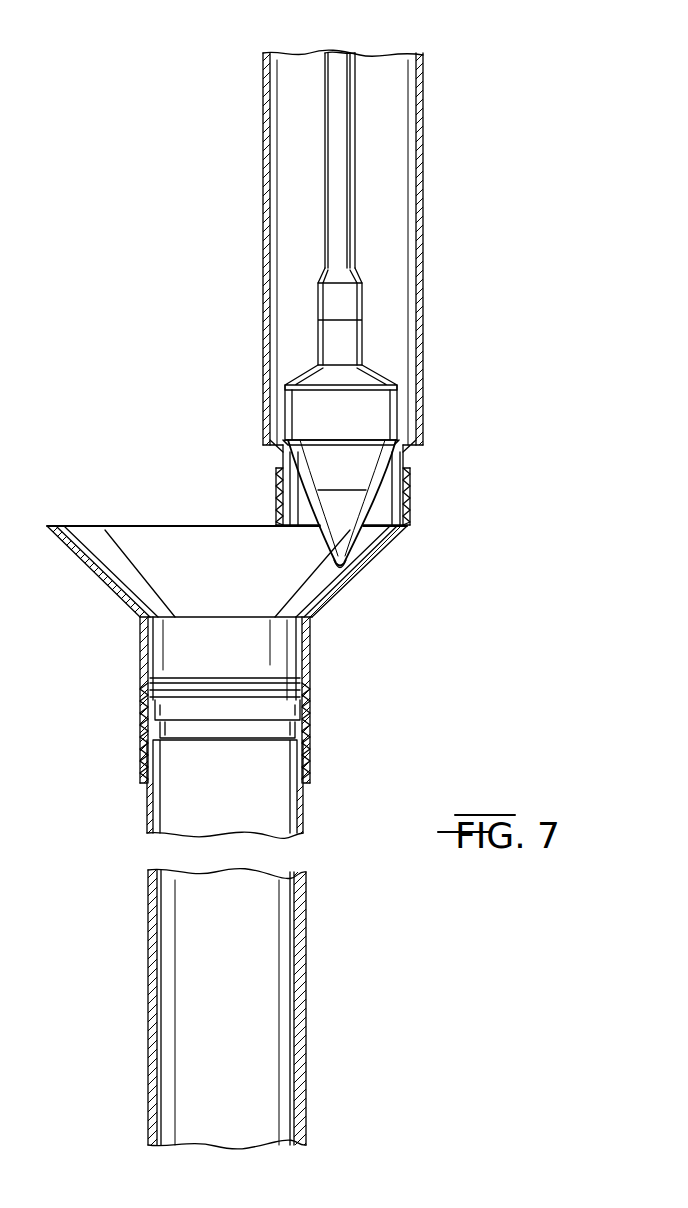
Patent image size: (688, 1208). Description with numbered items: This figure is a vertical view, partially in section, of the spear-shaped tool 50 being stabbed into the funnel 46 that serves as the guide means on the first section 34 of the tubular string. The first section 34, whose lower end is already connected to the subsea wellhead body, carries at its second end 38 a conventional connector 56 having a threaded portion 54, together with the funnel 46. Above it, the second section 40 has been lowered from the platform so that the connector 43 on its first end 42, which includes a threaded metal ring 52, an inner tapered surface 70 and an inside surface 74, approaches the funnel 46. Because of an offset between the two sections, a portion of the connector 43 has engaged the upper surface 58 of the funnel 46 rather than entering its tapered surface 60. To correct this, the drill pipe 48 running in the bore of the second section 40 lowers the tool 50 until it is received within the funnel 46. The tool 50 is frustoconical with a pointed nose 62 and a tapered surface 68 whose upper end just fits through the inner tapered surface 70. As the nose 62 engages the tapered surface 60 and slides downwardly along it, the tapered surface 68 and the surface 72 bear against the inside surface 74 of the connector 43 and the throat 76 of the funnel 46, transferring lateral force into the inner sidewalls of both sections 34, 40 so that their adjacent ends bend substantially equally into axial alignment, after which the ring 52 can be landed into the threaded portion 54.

The first section 34 is at (148, 1046).
The second end 38 is at (147, 800).
The second section 40 is at (262, 113).
The first end 42 is at (262, 207).
The connector 43 is at (275, 466).
The funnel 46 is at (345, 578).
The drill pipe 48 is at (355, 73).
The tool 50 is at (300, 412).
The threaded metal ring 52 is at (412, 495).
The threaded portion 54 is at (290, 675).
The connector 56 is at (305, 720).
The upper surface 58 is at (78, 490).
The tapered surface 60 is at (92, 576).
The pointed nose 62 is at (335, 575).
The tapered surface 68 is at (303, 470).
The inner tapered surface 70 is at (412, 440).
The surface 72 is at (397, 392).
The inside surface 74 is at (397, 527).
The throat 76 is at (160, 660).